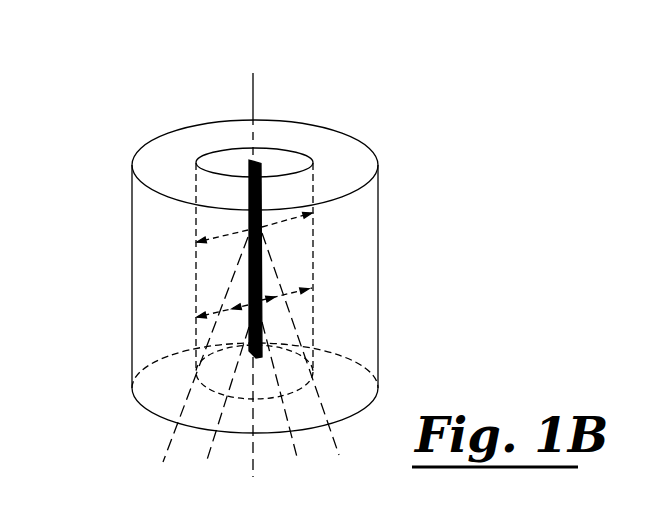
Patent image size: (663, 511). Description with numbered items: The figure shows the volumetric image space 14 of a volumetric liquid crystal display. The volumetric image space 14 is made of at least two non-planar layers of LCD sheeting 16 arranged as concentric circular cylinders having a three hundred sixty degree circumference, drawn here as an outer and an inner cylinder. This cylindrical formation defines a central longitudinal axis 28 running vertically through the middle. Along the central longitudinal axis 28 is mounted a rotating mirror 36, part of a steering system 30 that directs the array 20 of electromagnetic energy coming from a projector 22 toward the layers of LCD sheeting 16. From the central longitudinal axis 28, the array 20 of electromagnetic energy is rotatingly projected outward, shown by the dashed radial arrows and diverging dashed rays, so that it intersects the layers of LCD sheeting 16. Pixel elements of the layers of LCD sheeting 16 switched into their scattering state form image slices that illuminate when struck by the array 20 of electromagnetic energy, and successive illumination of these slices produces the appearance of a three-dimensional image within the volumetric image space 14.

The volumetric image space 14 is at (362, 250).
The layers of LCD sheeting 16 is at (281, 147).
The array of electromagnetic energy 20 is at (170, 443).
The projector 22 is at (362, 4).
The central longitudinal axis 28 is at (249, 88).
The steering system 30 is at (247, 160).
The rotating mirror 36 is at (249, 192).